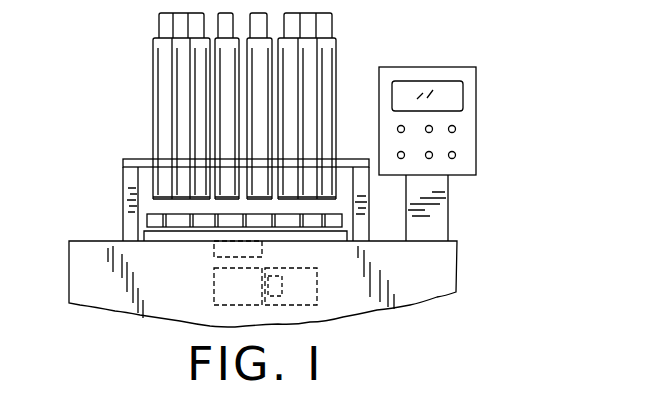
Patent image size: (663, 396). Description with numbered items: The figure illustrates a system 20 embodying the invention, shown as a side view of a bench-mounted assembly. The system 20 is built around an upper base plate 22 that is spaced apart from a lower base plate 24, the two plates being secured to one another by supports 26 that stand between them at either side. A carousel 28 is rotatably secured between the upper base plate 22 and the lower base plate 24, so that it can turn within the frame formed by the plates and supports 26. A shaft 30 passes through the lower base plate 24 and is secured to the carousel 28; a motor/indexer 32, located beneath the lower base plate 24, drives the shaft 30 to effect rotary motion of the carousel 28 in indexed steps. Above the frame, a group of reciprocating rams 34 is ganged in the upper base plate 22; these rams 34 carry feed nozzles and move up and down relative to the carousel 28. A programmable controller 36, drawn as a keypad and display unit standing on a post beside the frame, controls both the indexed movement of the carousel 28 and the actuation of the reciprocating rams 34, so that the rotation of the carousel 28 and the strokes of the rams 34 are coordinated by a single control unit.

The system 20 is at (505, 88).
The upper base plate 22 is at (136, 162).
The lower base plate 24 is at (330, 243).
The supports 26 is at (135, 182).
The carousel 28 is at (147, 218).
The shaft 30 is at (214, 265).
The motor/indexer 32 is at (302, 303).
The reciprocating rams 34 is at (336, 60).
The programmable controller 36 is at (476, 158).